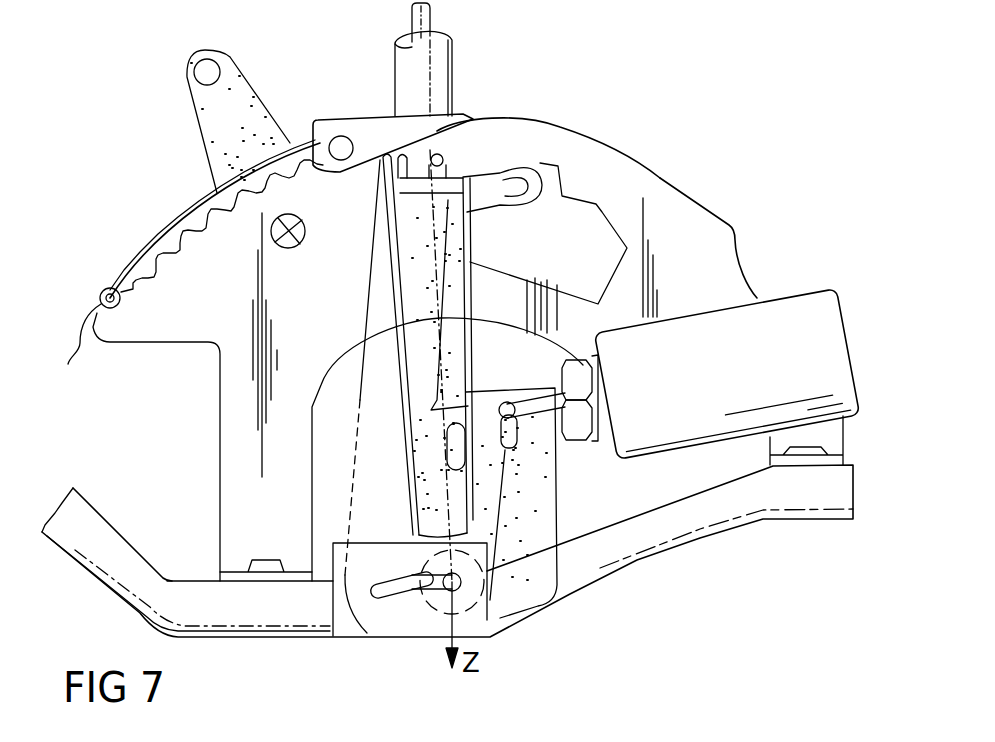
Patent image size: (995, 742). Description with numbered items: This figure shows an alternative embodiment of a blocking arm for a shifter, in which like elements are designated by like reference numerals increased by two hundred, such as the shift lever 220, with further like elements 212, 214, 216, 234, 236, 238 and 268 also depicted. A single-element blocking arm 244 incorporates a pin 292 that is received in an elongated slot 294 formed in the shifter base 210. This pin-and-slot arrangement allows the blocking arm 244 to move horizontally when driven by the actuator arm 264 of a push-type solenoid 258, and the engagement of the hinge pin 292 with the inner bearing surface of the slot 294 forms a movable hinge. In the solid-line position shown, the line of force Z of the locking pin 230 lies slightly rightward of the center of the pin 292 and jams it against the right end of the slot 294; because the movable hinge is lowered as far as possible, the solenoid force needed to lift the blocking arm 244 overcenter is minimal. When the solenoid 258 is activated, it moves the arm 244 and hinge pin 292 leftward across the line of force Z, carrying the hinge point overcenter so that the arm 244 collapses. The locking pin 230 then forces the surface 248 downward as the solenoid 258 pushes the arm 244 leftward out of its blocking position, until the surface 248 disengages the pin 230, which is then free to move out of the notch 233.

The shifter base 210 is at (655, 538).
The housing wall 212 is at (665, 195).
The toothed ratchet band 214 is at (198, 210).
The housing cover 216 is at (578, 198).
The shift lever 220 is at (402, 62).
The locking pin 230 is at (405, 187).
The notch 233 is at (430, 160).
The pivot lever 234 is at (356, 128).
The spring band 236 is at (153, 228).
The pivot end 238 is at (68, 364).
The blocking arm 244 is at (468, 250).
The surface 248 is at (458, 172).
The push-type solenoid 258 is at (785, 308).
The actuator arm 264 is at (567, 410).
The tab 268 is at (187, 77).
The hinge pin 292 is at (495, 605).
The elongated slot 294 is at (392, 605).